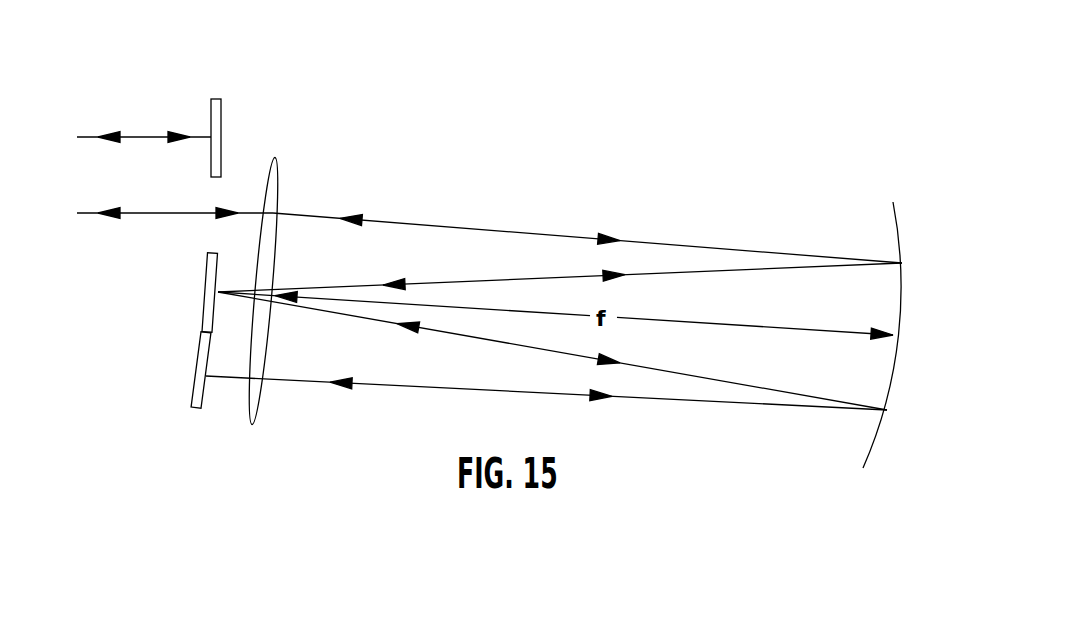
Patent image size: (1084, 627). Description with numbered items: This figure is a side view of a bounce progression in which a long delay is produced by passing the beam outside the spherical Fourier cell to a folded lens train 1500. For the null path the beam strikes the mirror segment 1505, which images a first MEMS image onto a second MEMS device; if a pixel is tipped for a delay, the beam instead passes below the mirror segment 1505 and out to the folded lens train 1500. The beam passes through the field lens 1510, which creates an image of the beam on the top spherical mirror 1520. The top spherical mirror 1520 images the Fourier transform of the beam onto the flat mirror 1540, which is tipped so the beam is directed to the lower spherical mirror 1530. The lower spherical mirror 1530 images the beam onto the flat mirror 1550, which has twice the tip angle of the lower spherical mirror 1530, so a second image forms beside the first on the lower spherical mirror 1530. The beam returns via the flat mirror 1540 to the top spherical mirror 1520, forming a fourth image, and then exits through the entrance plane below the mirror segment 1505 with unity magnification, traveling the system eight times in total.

The folded lens train 1500 is at (380, 430).
The mirror segment 1505 is at (222, 115).
The field lens 1510 is at (250, 418).
The top spherical mirror 1520 is at (896, 222).
The lower spherical mirror 1530 is at (872, 453).
The flat mirror 1540 is at (207, 292).
The flat mirror 1550 is at (190, 392).